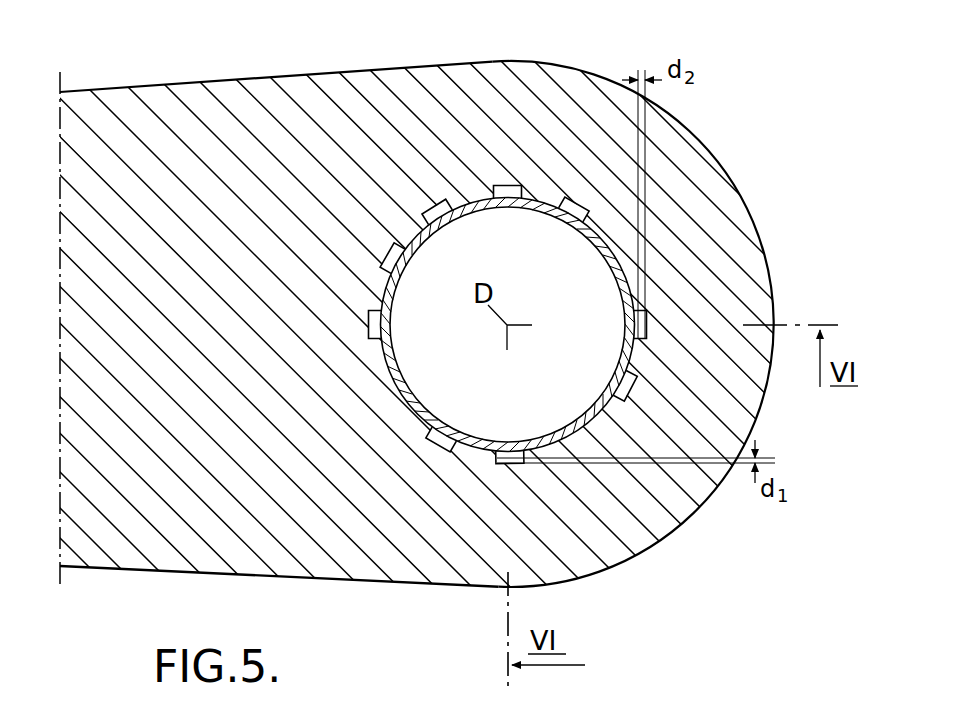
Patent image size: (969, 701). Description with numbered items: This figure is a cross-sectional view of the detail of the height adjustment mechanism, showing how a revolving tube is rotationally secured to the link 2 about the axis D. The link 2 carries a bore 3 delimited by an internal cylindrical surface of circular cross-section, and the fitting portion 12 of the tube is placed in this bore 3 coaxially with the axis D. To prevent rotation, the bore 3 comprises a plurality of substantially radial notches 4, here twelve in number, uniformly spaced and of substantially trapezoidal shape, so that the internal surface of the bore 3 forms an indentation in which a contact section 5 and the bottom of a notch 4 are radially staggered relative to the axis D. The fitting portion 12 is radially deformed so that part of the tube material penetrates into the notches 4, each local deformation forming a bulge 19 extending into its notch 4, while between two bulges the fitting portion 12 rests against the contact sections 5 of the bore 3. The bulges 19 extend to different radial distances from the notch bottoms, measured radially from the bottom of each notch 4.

The link 2 is at (130, 507).
The bore 3 is at (605, 233).
The notches 4 is at (633, 385).
The contact section 5 is at (472, 435).
The fitting portion 12 is at (545, 198).
The bulge 19 is at (503, 190).